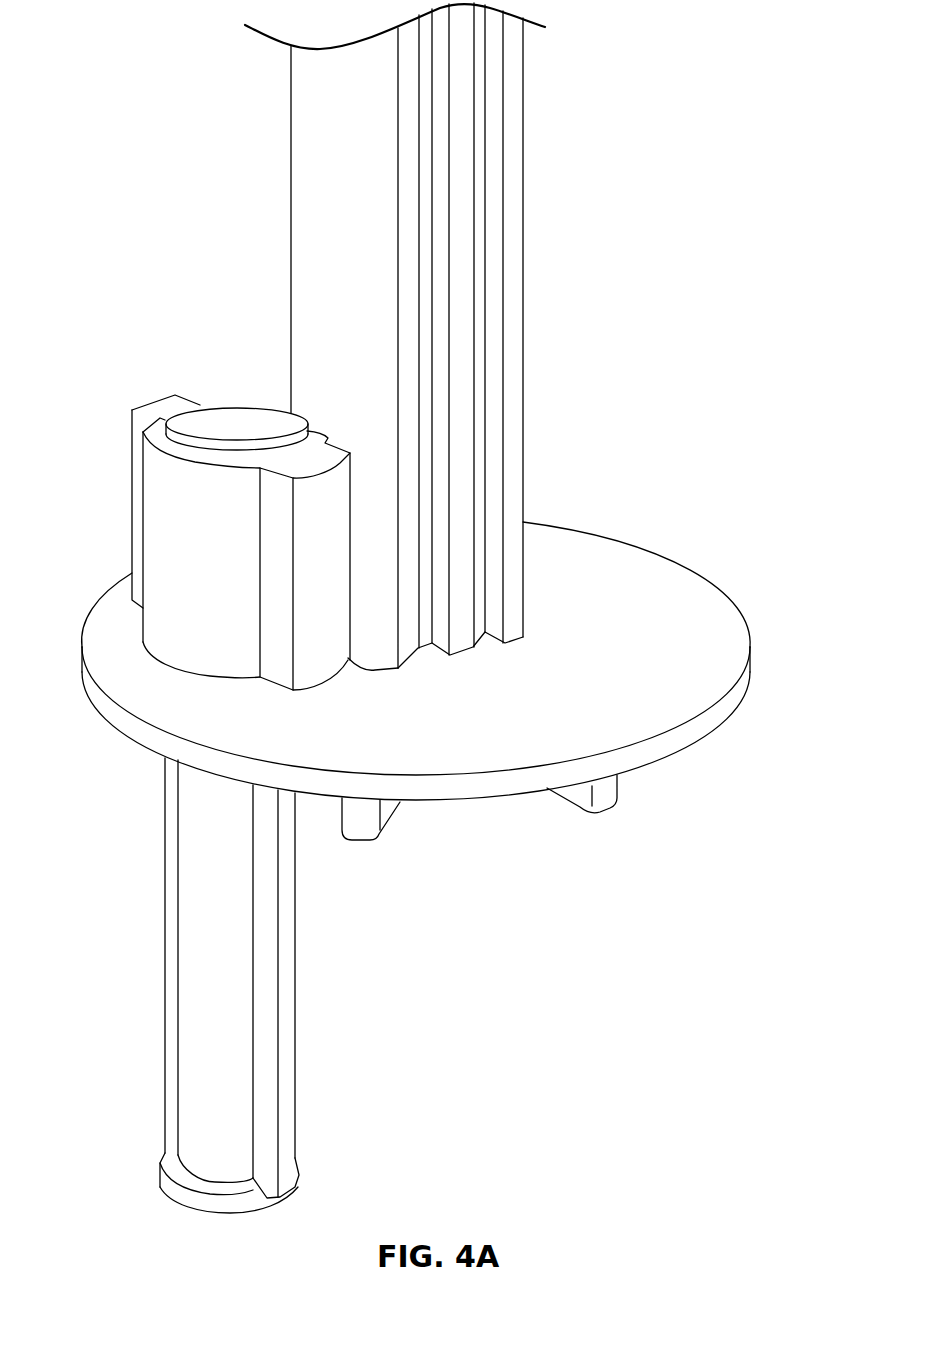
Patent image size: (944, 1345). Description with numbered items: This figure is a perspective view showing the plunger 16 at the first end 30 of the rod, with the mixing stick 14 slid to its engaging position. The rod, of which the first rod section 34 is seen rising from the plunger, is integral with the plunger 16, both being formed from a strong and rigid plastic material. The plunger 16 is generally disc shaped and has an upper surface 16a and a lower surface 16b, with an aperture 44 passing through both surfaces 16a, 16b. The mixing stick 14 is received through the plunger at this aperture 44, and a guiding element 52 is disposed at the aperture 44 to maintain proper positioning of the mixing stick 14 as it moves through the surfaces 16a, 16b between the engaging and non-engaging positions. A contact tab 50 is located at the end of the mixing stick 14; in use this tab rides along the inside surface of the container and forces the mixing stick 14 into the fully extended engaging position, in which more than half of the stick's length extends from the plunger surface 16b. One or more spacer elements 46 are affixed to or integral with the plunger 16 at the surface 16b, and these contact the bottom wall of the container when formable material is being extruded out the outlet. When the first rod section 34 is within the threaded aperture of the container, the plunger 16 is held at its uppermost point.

The mixing stick 14 is at (222, 975).
The plunger 16 is at (406, 687).
The plunger surface 16a is at (172, 710).
The plunger surface 16b is at (546, 790).
The first end 30 is at (513, 630).
The first rod section 34 is at (375, 276).
The aperture 44 is at (165, 658).
The spacer element 46 is at (363, 827).
The contact tab 50 is at (243, 422).
The guiding element 52 is at (188, 517).